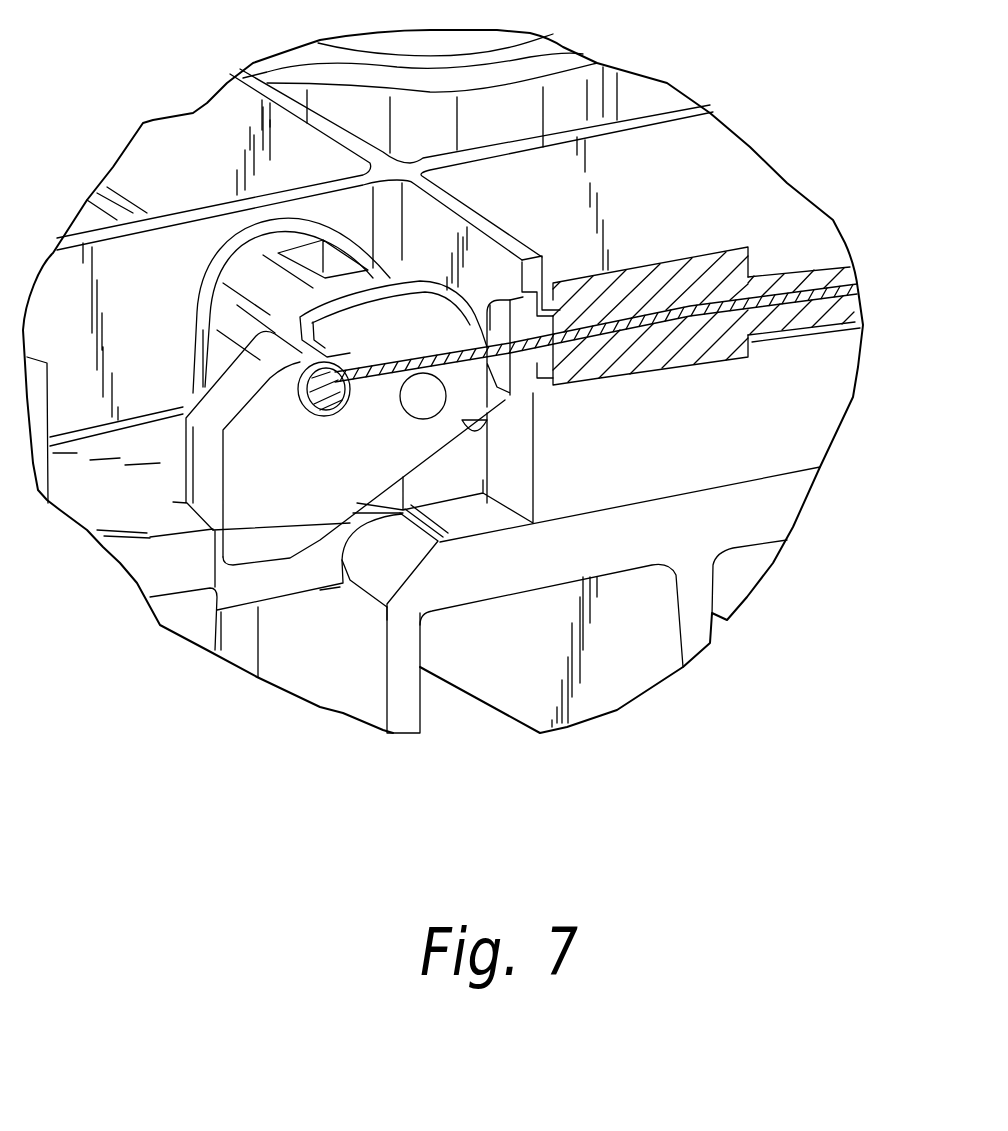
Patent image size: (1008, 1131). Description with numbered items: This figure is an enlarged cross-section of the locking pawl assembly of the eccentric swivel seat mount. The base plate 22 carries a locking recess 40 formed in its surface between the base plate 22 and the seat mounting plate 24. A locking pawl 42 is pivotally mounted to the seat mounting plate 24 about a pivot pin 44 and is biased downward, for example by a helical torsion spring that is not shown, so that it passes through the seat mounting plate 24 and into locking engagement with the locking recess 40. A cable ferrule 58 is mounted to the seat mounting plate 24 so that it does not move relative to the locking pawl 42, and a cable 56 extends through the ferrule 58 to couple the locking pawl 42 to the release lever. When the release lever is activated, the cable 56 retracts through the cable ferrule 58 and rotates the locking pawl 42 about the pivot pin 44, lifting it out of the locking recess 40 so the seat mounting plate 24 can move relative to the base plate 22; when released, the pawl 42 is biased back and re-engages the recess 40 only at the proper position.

The base plate 22 is at (767, 503).
The seat mounting plate 24 is at (710, 145).
The locking recess 40 is at (247, 587).
The locking pawl 42 is at (207, 482).
The pivot pin 44 is at (417, 397).
The cable 56 is at (805, 290).
The cable ferrule 58 is at (700, 277).